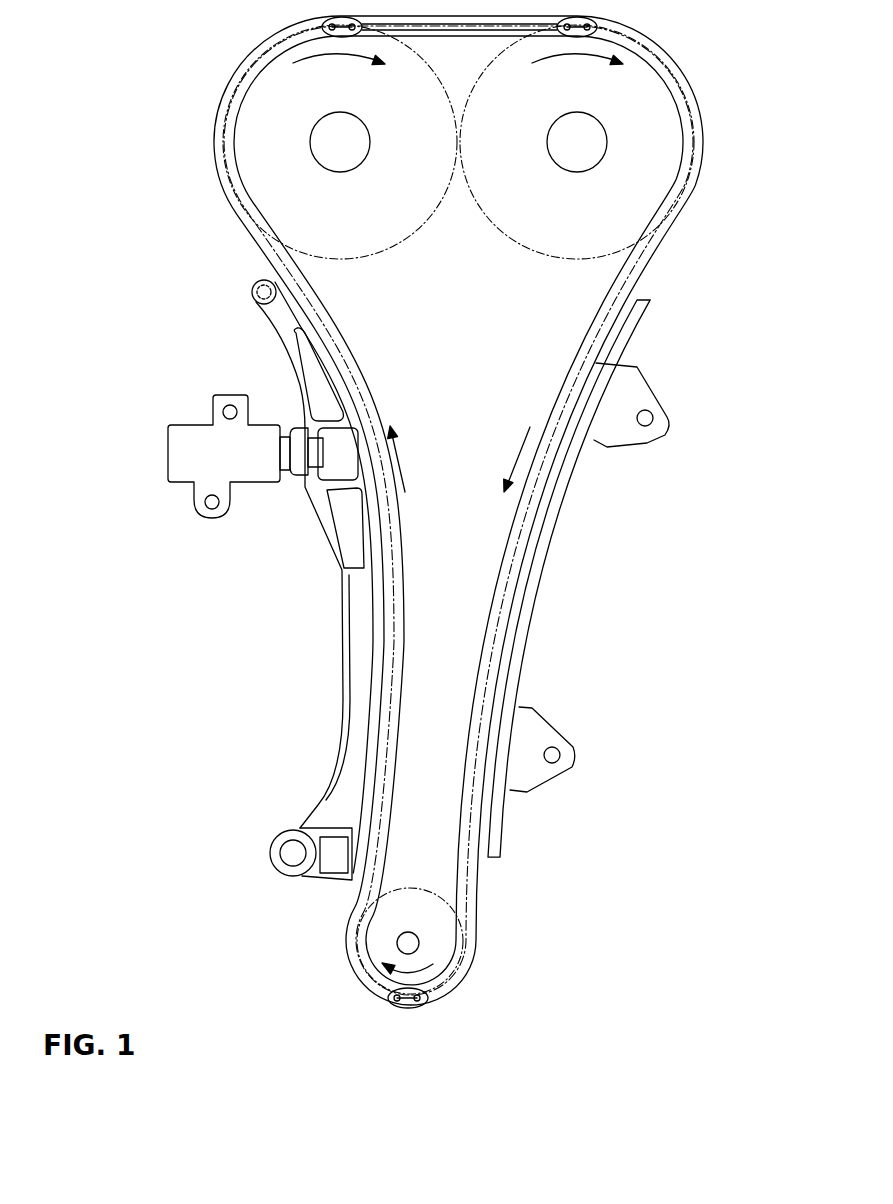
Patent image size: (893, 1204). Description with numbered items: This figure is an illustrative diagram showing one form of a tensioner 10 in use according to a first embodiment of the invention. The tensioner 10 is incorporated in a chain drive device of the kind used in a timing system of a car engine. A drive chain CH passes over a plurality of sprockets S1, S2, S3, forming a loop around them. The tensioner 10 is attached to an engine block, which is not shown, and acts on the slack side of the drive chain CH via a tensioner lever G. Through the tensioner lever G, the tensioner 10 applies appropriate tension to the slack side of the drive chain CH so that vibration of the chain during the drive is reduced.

The sprocket S1 is at (437, 942).
The sprocket S2 is at (262, 135).
The sprocket S3 is at (640, 127).
The drive chain CH is at (650, 262).
The tensioner lever G is at (355, 752).
The tensioner 10 is at (210, 435).